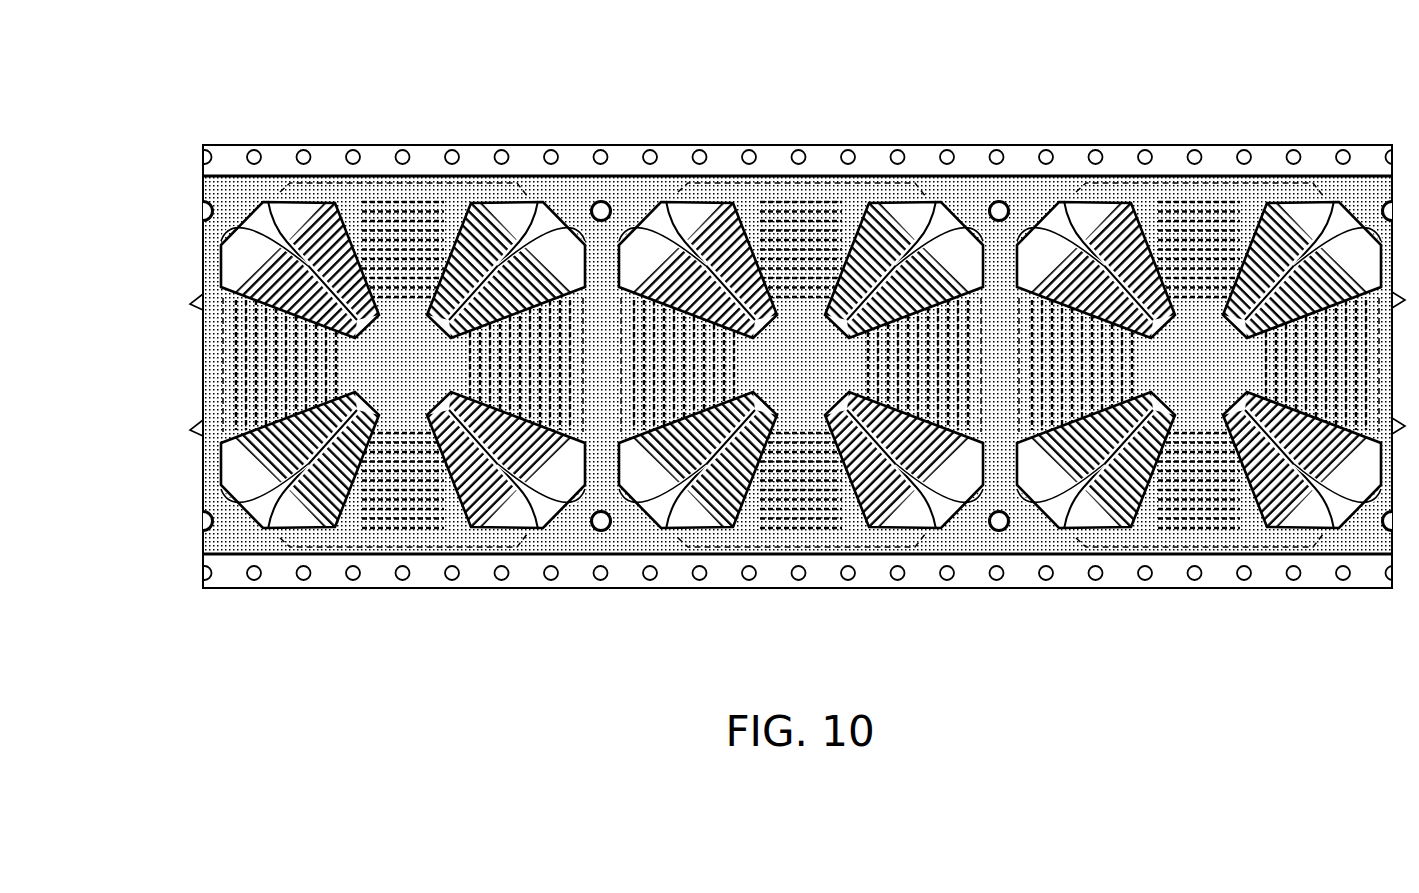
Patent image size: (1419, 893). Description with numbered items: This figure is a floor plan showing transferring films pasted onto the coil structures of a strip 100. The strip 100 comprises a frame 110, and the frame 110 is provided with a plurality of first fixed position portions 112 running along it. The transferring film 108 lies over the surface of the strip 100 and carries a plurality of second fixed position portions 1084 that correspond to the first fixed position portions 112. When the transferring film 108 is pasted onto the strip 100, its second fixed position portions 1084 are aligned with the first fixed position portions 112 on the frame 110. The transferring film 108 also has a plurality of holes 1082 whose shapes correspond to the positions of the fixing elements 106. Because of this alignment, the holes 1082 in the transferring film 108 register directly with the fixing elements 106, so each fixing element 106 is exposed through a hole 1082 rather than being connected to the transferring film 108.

The strip 100 is at (321, 140).
The frame 110 is at (383, 158).
The first fixed position portion 112 is at (453, 149).
The second fixed position portion 1084 is at (593, 204).
The hole 1082 is at (689, 203).
The fixing element 106 is at (221, 242).
The transferring film 108 is at (580, 540).